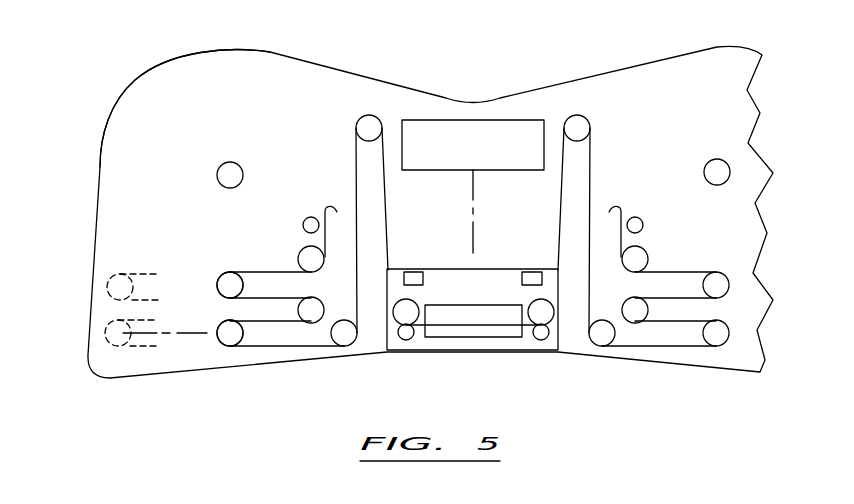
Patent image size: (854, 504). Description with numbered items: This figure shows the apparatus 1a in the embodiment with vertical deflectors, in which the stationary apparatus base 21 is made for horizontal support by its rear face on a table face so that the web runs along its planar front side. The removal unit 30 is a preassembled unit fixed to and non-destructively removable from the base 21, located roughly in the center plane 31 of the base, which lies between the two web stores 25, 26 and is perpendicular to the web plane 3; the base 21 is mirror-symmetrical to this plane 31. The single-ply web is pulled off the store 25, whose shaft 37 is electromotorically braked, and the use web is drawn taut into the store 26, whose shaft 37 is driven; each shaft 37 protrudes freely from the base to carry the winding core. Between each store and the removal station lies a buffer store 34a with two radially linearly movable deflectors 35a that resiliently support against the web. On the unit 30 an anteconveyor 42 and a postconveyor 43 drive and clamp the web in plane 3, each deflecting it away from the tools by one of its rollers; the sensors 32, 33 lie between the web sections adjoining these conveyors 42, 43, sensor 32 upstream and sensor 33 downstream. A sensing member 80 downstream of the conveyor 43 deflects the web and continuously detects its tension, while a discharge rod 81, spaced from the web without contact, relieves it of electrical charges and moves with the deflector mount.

The apparatus 1a is at (592, 60).
The apparatus base 21 is at (128, 78).
The web store 25 is at (216, 132).
The web store 26 is at (688, 175).
The web plane 3 is at (178, 335).
The removal unit 30 is at (484, 243).
The center plane of base 31 is at (472, 195).
The sensor 32 is at (422, 268).
The sensor 33 is at (535, 268).
The buffer store 34a is at (276, 260).
The deflector 35a is at (226, 290).
The shaft 37 is at (230, 162).
The anteconveyor 42 is at (405, 341).
The postconveyor 43 is at (540, 341).
The sensing member 80 is at (580, 126).
The discharge rod 81 is at (309, 218).